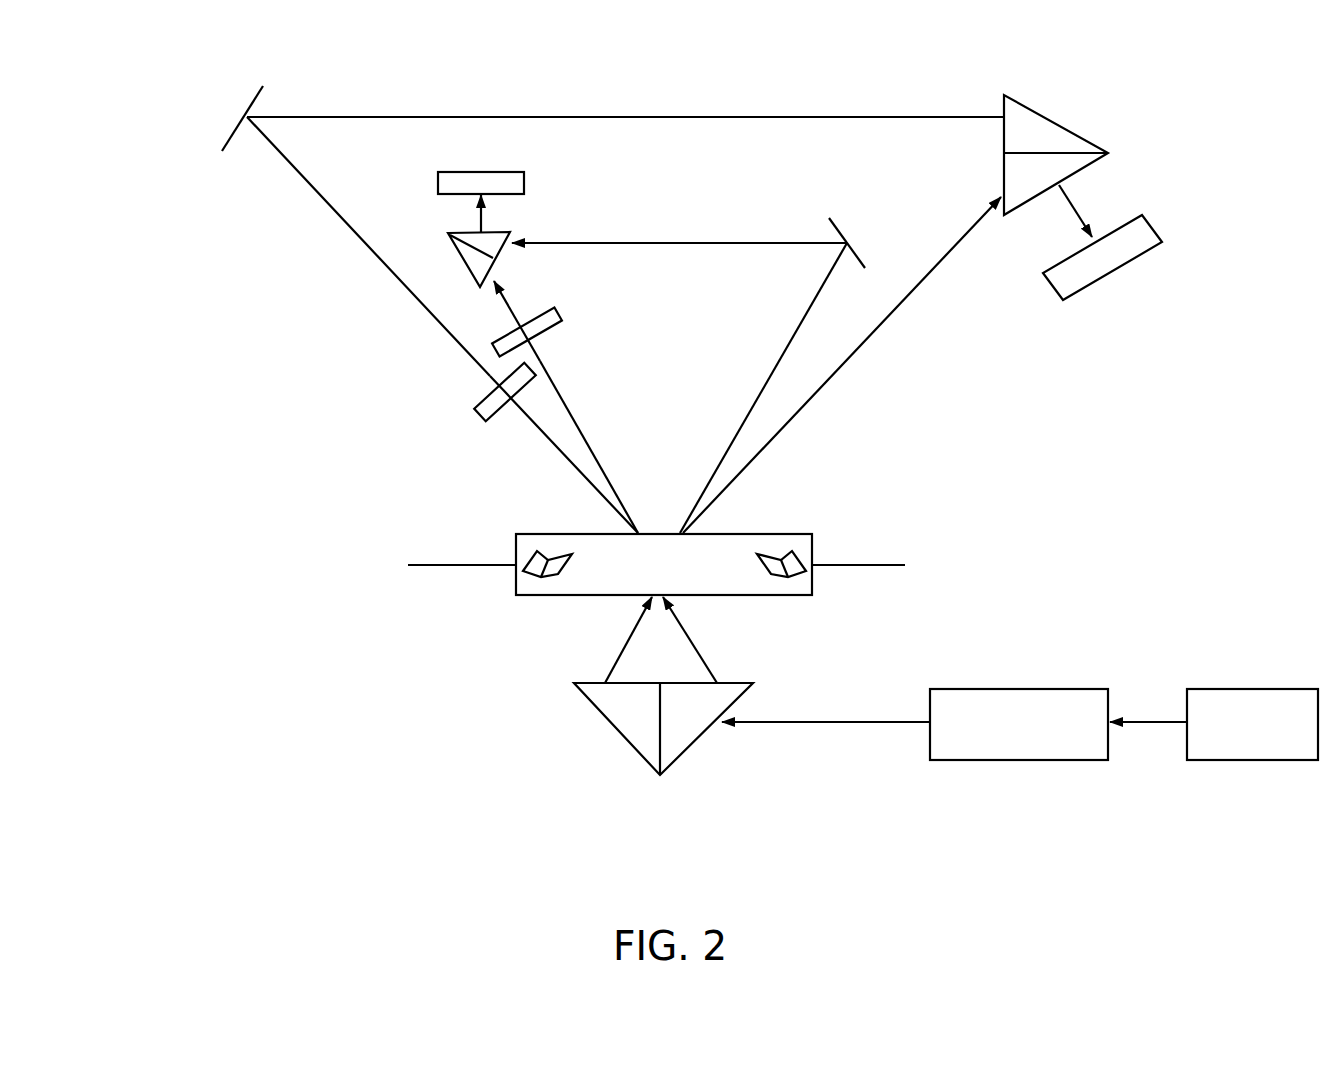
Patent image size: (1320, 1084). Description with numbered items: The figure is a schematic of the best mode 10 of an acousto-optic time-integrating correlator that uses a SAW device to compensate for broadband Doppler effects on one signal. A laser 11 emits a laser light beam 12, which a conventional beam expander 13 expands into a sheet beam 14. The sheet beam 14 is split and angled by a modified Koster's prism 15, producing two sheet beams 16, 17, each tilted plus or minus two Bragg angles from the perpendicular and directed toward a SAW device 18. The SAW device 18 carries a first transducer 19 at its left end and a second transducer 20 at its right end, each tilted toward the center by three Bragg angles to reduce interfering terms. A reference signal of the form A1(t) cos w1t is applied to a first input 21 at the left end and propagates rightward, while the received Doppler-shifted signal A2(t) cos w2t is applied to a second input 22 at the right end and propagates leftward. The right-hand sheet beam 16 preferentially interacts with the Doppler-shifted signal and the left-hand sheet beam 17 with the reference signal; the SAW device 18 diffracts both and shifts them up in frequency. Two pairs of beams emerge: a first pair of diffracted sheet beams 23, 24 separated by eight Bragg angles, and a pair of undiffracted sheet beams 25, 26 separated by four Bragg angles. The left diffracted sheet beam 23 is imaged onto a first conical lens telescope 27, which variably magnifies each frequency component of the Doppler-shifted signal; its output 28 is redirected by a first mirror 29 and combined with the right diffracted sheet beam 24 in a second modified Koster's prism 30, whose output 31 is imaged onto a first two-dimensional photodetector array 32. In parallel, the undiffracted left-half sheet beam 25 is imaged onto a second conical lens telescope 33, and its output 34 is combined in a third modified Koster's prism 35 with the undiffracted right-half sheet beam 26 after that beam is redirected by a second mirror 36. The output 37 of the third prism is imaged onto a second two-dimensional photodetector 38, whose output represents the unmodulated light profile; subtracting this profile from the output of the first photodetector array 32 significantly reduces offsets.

The best mode 10 is at (1232, 143).
The laser 11 is at (1247, 761).
The laser light beam 12 is at (1145, 723).
The beam expander 13 is at (1015, 761).
The sheet beam 14 is at (810, 722).
The modified Koster's prism 15 is at (620, 732).
The right-hand sheet beam 16 is at (688, 635).
The left-hand sheet beam 17 is at (623, 650).
The SAW device 18 is at (757, 532).
The first transducer 19 is at (522, 572).
The second transducer 20 is at (802, 574).
The first input 21 is at (470, 565).
The second input 22 is at (860, 565).
The left sheet beam of first pair of diffracted sheet beams 23 is at (556, 447).
The right sheet beam of first pair of diffracted sheet beams 24 is at (812, 398).
The undiffracted left-half sheet beam 25 is at (581, 428).
The undiffracted right-half sheet beam 26 is at (768, 380).
The first conical lens telescope 27 is at (478, 416).
The output of first conical lens telescope 28 is at (397, 284).
The first mirror 29 is at (222, 151).
The second modified Koster's prism 30 is at (1063, 120).
The output of second modified Koster's prism 31 is at (1073, 201).
The first two-dimensional photodetector array 32 is at (1157, 228).
The second conical lens telescope 33 is at (560, 313).
The output of second conical lens telescope 34 is at (502, 290).
The third modified Koster's prism 35 is at (505, 232).
The second mirror 36 is at (845, 232).
The output of third modified Koster's prism 37 is at (477, 217).
The second two-dimensional photodetector 38 is at (524, 174).